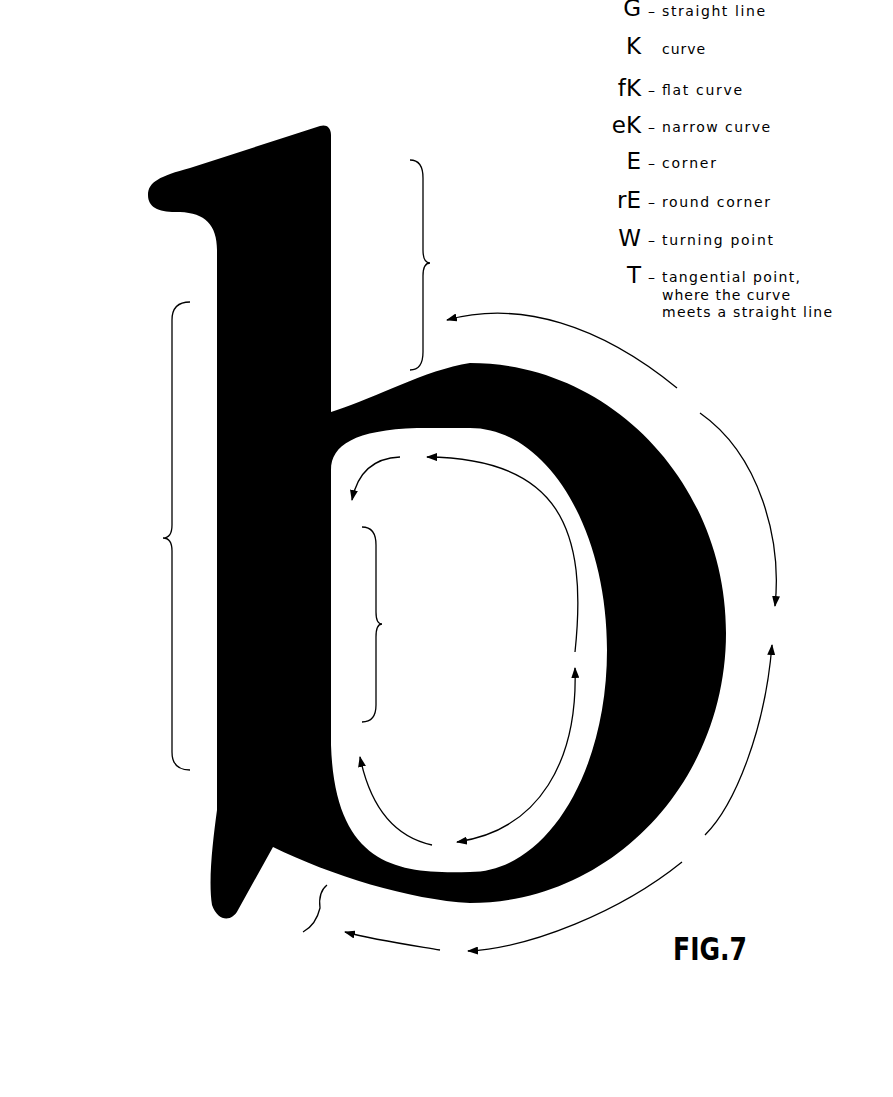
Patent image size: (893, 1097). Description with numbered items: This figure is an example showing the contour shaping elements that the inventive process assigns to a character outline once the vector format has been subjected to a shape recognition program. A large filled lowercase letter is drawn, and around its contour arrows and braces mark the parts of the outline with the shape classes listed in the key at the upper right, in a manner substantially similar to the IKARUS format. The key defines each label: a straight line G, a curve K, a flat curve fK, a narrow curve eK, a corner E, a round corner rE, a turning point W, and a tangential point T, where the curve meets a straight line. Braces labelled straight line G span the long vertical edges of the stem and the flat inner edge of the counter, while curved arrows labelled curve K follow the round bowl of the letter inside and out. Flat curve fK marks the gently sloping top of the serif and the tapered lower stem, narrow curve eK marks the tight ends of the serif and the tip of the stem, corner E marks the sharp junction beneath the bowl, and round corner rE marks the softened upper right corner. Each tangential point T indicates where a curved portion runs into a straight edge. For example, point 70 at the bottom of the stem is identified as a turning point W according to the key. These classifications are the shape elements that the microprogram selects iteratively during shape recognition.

The point 70 is at (202, 904).
The straight line G is at (295, 546).
The curve K is at (498, 294).
The flat curve fK is at (243, 84).
The narrow curve eK is at (226, 992).
The corner E is at (273, 853).
The round corner rE is at (333, 117).
The turning point W is at (142, 893).
The tangential point T is at (405, 143).